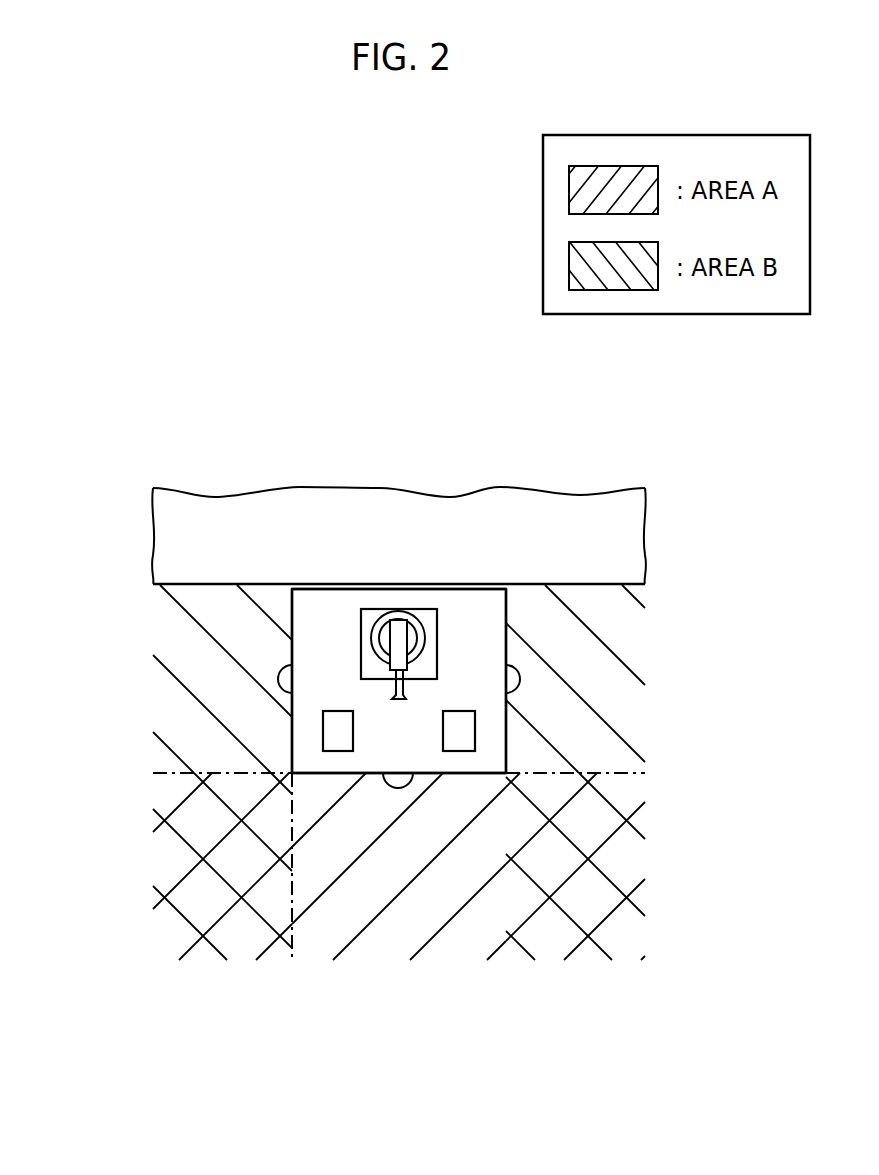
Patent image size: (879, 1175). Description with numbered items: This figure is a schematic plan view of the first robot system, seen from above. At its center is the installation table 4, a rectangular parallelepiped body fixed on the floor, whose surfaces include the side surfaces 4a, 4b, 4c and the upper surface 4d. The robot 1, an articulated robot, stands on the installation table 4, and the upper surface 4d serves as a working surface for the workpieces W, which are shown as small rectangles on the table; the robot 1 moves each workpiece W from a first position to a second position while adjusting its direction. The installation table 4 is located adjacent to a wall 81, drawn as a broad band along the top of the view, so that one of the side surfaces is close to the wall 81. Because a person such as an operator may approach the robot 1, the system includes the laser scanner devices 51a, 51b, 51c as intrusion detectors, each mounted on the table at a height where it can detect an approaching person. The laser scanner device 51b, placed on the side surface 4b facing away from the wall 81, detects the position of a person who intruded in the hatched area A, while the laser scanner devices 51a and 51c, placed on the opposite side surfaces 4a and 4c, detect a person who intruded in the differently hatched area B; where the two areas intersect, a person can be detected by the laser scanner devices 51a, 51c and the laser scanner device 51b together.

The robot 1 is at (398, 640).
The installation table 4 is at (307, 733).
The side surface 4a is at (291, 603).
The side surface 4b is at (433, 775).
The side surface 4c is at (507, 607).
The upper surface 4d is at (472, 618).
The laser scanner device 51a is at (286, 668).
The laser scanner device 51b is at (390, 790).
The laser scanner device 51c is at (522, 678).
The wall 81 is at (195, 586).
The workpiece W is at (337, 733).